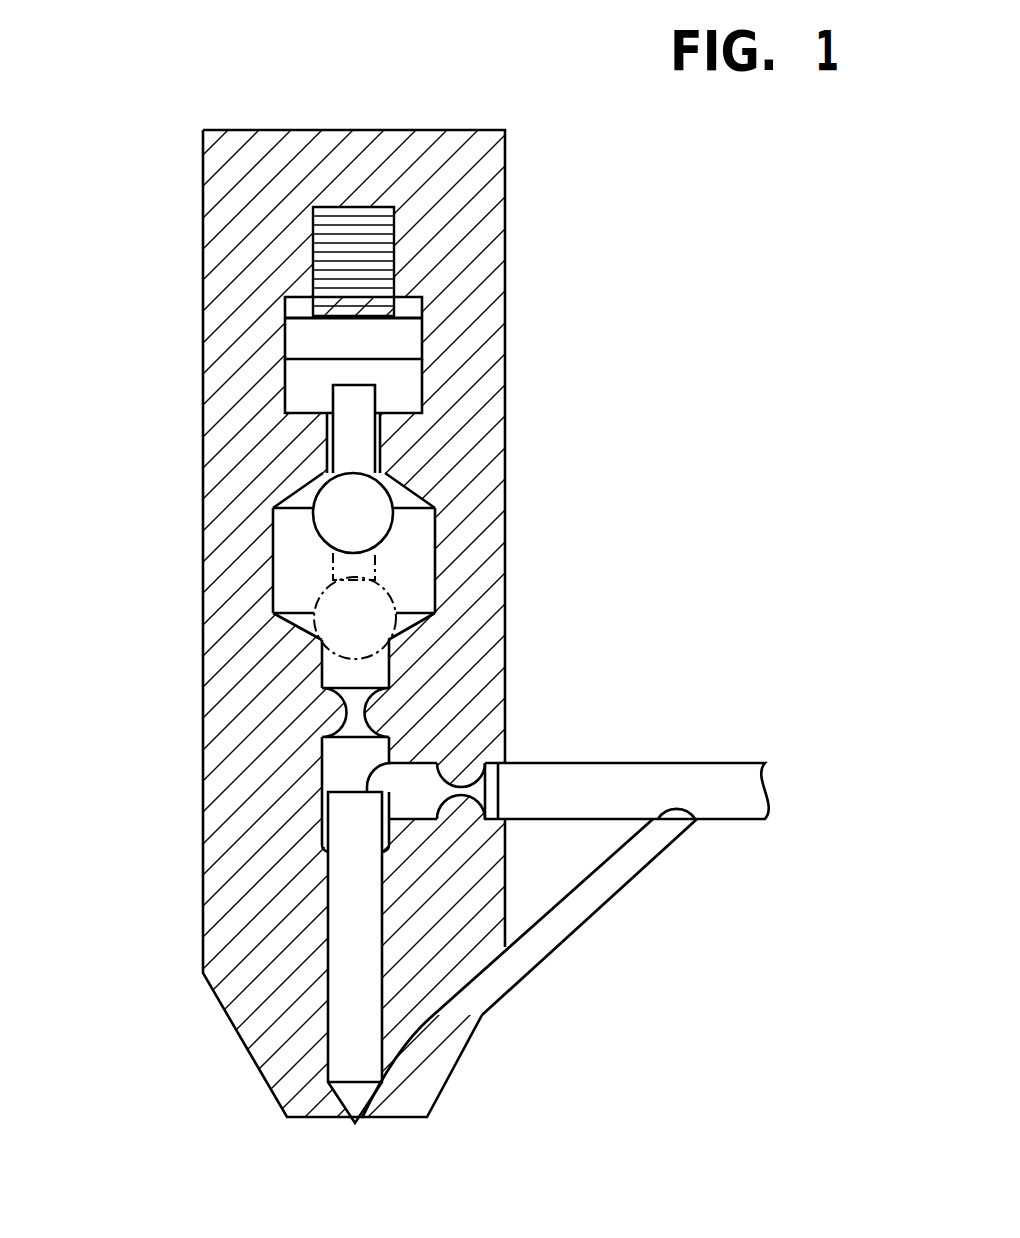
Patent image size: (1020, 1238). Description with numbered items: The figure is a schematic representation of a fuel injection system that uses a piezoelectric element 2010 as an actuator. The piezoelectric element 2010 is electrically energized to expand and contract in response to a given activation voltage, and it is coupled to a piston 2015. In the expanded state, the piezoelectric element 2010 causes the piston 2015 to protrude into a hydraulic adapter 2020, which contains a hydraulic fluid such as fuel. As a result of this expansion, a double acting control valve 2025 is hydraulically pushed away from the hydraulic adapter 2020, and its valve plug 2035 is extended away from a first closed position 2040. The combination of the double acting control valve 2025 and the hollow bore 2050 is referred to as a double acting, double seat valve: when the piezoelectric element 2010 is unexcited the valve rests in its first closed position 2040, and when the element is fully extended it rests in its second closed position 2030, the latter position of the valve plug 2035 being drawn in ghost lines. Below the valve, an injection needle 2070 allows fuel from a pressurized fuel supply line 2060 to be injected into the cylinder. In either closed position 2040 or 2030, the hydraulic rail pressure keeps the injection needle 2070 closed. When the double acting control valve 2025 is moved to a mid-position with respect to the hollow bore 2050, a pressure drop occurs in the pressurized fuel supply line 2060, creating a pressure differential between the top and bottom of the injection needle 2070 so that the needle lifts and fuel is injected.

The piezoelectric element 2010 is at (340, 257).
The piston 2015 is at (398, 337).
The hydraulic adapter 2020 is at (403, 388).
The double acting control valve 2025 is at (353, 435).
The second closed position 2030 is at (389, 641).
The valve plug 2035 is at (340, 518).
The first closed position 2040 is at (390, 473).
The hollow bore 2050 is at (423, 555).
The pressurized fuel supply line 2060 is at (685, 787).
The injection needle 2070 is at (343, 933).